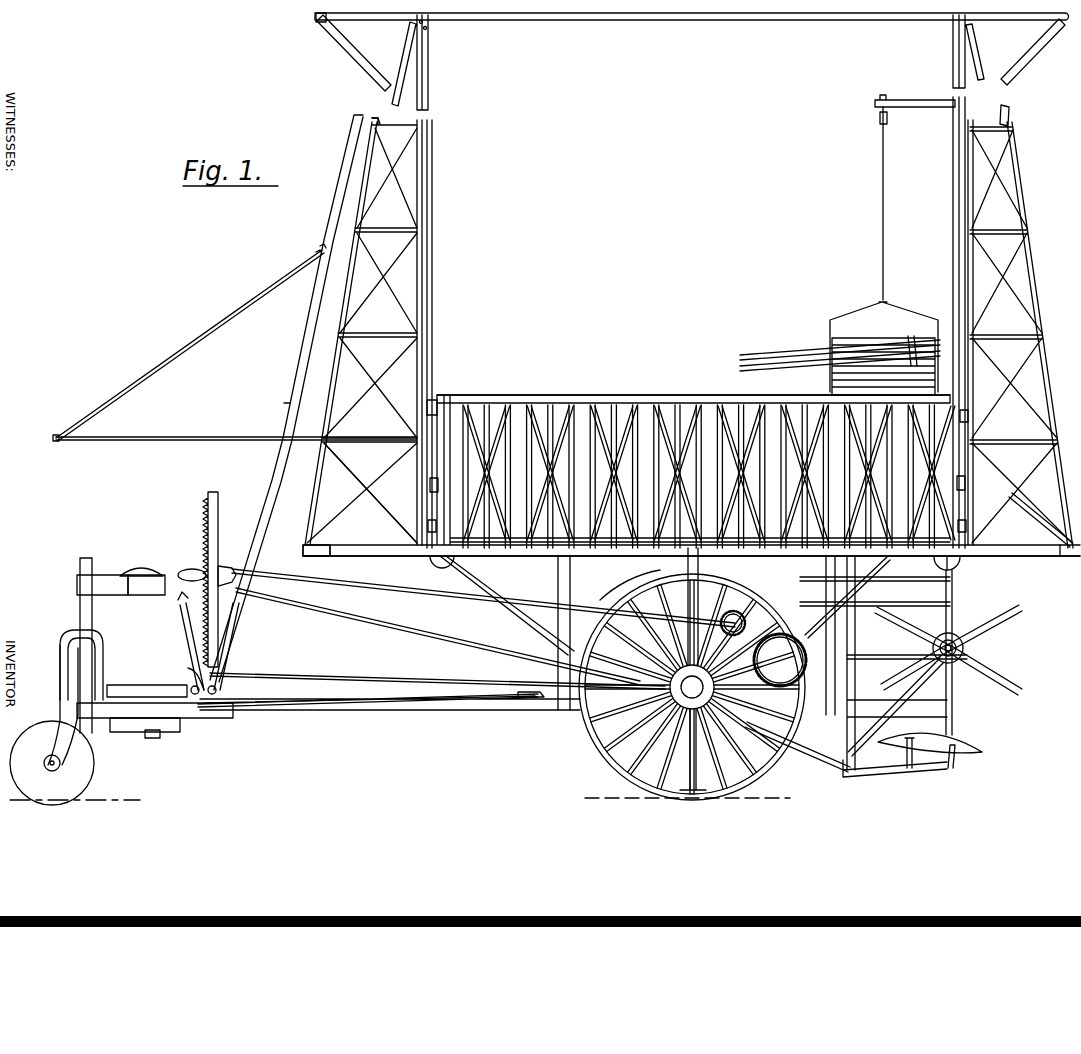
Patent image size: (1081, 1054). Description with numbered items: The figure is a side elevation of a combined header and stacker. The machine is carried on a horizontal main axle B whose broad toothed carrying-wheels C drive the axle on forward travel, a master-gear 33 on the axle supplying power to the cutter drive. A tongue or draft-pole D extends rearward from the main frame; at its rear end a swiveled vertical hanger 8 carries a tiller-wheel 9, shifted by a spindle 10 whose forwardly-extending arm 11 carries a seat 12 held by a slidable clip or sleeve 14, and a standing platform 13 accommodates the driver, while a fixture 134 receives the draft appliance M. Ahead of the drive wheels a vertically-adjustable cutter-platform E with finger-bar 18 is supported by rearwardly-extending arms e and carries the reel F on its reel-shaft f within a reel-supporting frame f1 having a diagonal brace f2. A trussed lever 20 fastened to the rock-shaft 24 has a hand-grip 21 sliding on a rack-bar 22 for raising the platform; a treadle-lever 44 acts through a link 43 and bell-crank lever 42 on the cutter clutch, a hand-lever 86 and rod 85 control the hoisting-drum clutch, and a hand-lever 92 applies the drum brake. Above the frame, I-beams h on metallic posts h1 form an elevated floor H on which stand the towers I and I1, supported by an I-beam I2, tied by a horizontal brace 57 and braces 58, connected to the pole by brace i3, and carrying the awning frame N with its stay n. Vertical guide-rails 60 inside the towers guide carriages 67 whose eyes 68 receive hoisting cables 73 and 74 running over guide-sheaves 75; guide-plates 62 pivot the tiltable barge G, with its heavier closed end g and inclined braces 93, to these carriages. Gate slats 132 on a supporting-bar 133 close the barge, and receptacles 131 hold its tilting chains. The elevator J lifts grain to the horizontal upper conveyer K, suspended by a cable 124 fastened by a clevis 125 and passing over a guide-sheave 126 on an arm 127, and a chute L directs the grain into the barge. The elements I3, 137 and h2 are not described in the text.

The horizontal brace 57 is at (637, 20).
The braces 58 is at (363, 63).
The vertical guide-rails 60 is at (430, 87).
The tower I is at (352, 280).
The tower I1 is at (1032, 270).
The I-beam I2 is at (333, 563).
The platform end I3 is at (1069, 567).
The hoisting cable 73 is at (433, 368).
The hoisting cable 74 is at (952, 294).
The arm 127 is at (908, 100).
The guide-sheave 126 is at (878, 116).
The cable 124 is at (882, 222).
The clevis 125 is at (850, 312).
The horizontal upper conveyer K is at (830, 376).
The chute L is at (772, 355).
The receiver or barge G is at (640, 408).
The closed end of the barge g is at (690, 410).
The vertical slats 132 is at (555, 410).
The supporting-bar 133 is at (540, 556).
The vertical guide-plates 62 is at (438, 404).
The eye 68 is at (430, 484).
The suspension-plate or carriage 67 is at (428, 526).
The inclined braces 93 is at (698, 495).
The rack-bar 22 is at (255, 512).
The stay n is at (228, 320).
The frame N is at (185, 442).
The brace i3 is at (279, 402).
The hand-grip 21 is at (190, 568).
The trussed lever 20 is at (380, 590).
The rod 85 is at (315, 676).
The tongue or draft-pole D is at (380, 710).
The link 43 is at (332, 708).
The bell-crank lever 42 is at (524, 700).
The floor H is at (565, 712).
The guide-sheaves 75 is at (485, 572).
The pulley 137 is at (440, 562).
The tiller-wheel 9 is at (82, 762).
The vertical hanger 8 is at (60, 678).
The spindle 10 is at (92, 615).
The arm 11 is at (114, 574).
The seat 12 is at (142, 568).
The clip or sleeve 14 is at (140, 596).
The standing platform 13 is at (135, 684).
The draft appliance M is at (145, 735).
The fixture 134 is at (155, 740).
The hand-lever 92 is at (184, 630).
The hand-lever 86 is at (230, 655).
The treadle-lever 44 is at (188, 668).
The main axle B is at (665, 730).
The master-gear 33 is at (615, 768).
The carrying-wheels C is at (740, 590).
The I-beams h is at (636, 582).
The metallic posts h1 is at (575, 580).
The bar h2 is at (783, 582).
The rock-shaft 24 is at (796, 630).
The rearwardly-extending arms e is at (790, 760).
The elevator J is at (955, 572).
The receptacles 131 is at (960, 575).
The reel-shaft f is at (965, 652).
The reel F is at (1000, 620).
The reel-supporting frame f1 is at (846, 710).
The diagonal brace f2 is at (906, 745).
The platform E is at (895, 776).
The finger-bar 18 is at (953, 768).